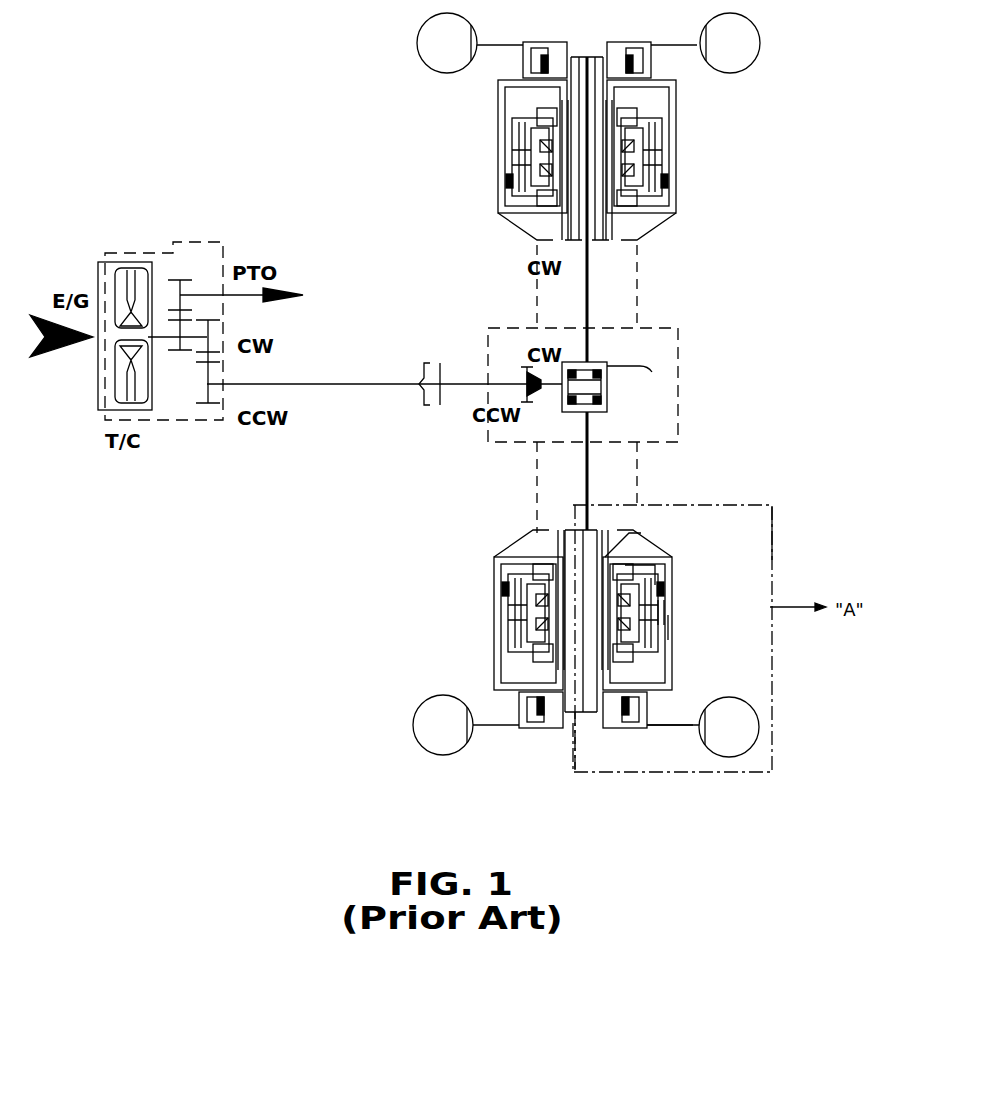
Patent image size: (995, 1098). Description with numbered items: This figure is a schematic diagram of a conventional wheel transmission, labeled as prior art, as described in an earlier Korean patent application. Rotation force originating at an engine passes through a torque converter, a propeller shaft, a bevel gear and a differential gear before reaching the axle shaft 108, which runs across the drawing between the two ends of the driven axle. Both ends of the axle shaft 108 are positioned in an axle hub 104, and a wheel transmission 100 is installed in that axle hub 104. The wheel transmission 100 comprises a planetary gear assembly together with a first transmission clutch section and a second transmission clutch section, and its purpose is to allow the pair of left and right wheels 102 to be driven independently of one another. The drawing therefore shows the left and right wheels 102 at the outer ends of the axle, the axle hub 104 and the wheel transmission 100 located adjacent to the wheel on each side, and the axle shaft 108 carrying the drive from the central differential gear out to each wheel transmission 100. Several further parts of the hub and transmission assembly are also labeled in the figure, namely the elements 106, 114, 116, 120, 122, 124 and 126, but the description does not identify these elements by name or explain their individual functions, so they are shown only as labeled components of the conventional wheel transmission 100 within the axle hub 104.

The wheel transmission 100 is at (667, 665).
The wheel 102 is at (743, 727).
The axle hub 104 is at (683, 650).
The hub 106 is at (675, 612).
The axle shaft 108 is at (593, 543).
The final reduction gear housing 114 is at (640, 540).
The drive shaft end 116 is at (575, 748).
The brake 120 is at (662, 567).
The bearing 122 is at (672, 630).
The wheel hub assembly 124 is at (782, 558).
The axle 126 is at (651, 730).